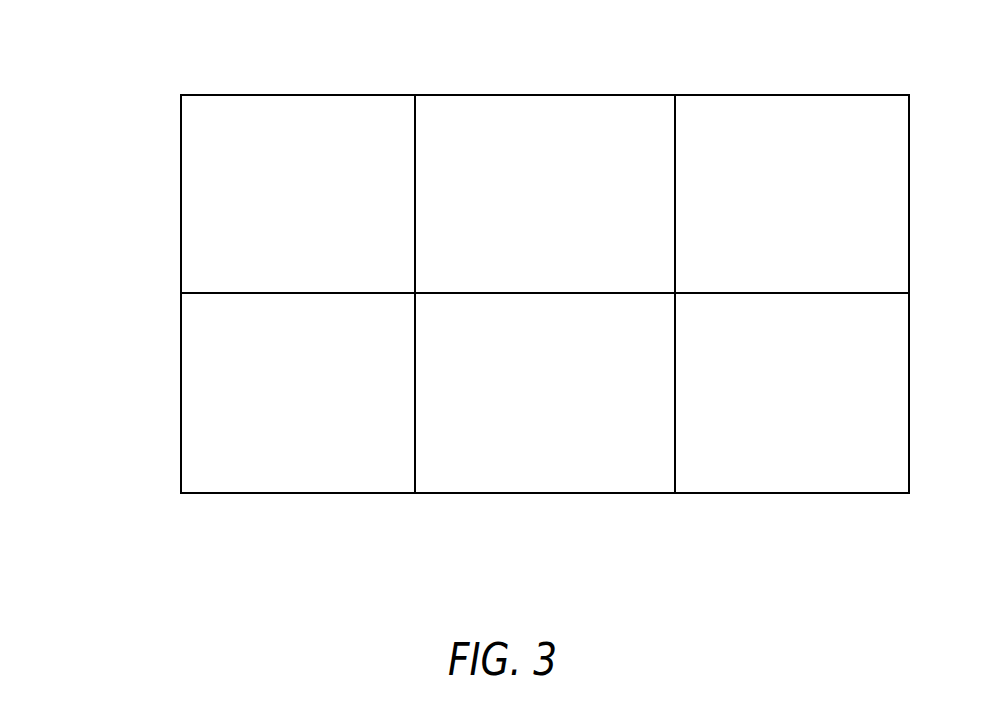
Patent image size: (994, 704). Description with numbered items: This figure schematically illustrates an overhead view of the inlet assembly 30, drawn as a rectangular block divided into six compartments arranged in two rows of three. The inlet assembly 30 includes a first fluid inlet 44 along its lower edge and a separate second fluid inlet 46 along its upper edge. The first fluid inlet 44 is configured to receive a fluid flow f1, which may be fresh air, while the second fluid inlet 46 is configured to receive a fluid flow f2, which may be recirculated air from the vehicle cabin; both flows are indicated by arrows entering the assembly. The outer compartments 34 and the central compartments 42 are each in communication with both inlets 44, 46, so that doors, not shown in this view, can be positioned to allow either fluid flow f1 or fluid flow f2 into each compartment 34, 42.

The inlet assembly 30 is at (113, 191).
The compartment 34 is at (545, 294).
The compartment 42 is at (545, 294).
The first fluid inlet 44 is at (464, 499).
The second fluid inlet 46 is at (464, 91).
The fluid flow f1 is at (554, 506).
The fluid flow f2 is at (554, 64).